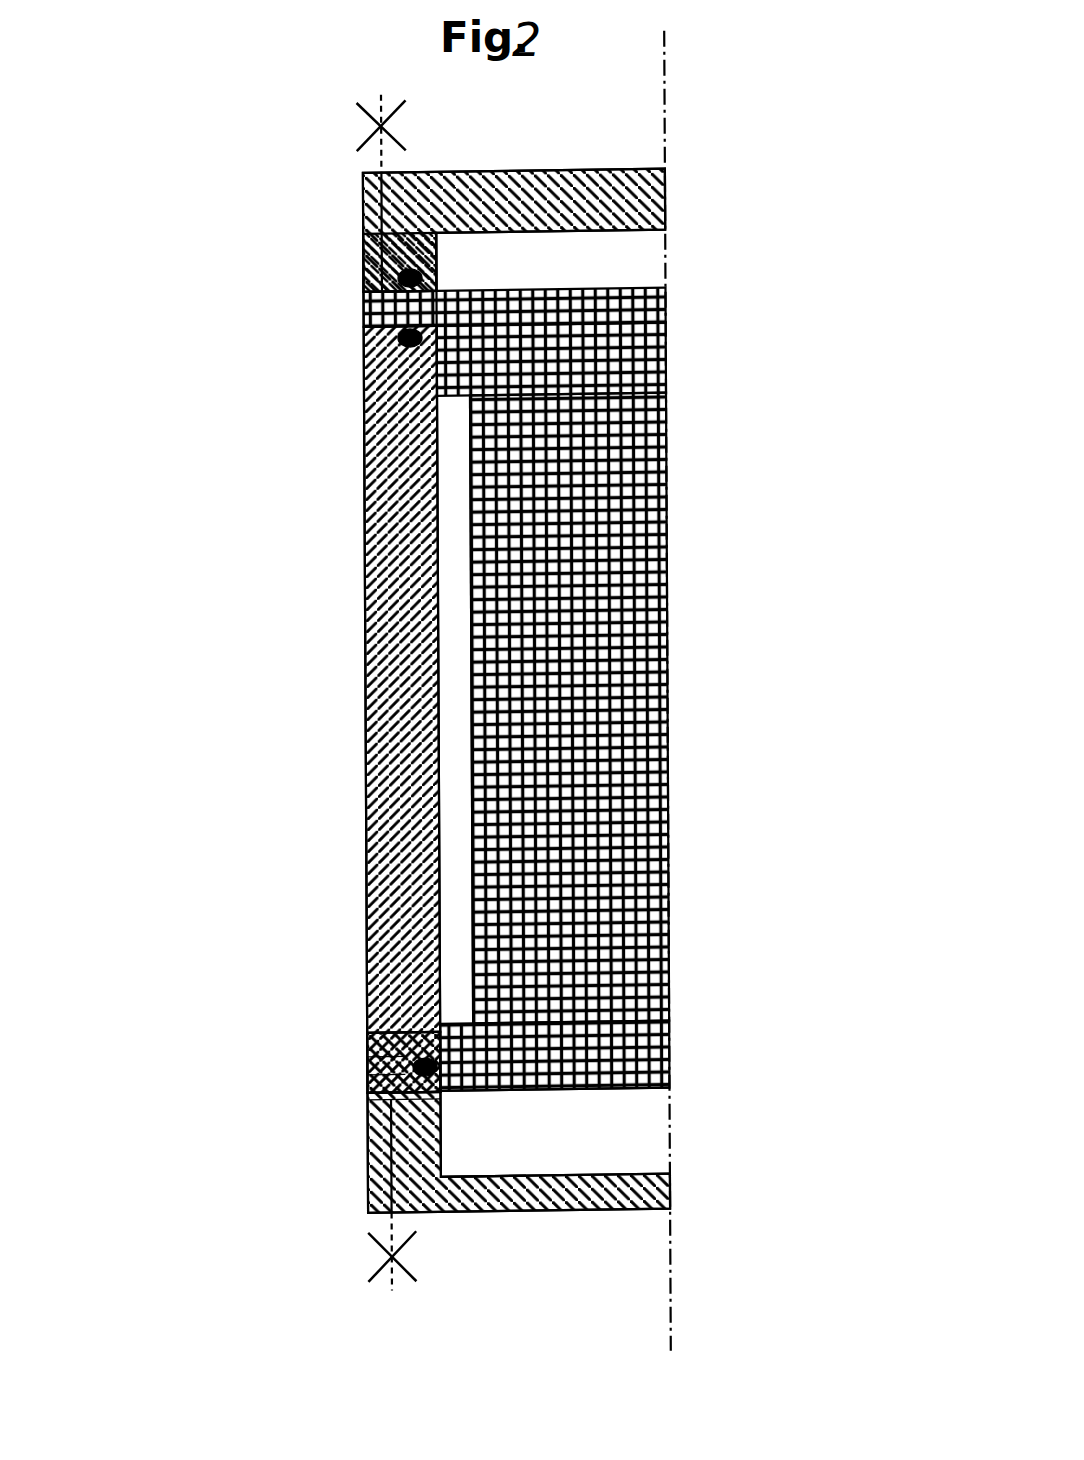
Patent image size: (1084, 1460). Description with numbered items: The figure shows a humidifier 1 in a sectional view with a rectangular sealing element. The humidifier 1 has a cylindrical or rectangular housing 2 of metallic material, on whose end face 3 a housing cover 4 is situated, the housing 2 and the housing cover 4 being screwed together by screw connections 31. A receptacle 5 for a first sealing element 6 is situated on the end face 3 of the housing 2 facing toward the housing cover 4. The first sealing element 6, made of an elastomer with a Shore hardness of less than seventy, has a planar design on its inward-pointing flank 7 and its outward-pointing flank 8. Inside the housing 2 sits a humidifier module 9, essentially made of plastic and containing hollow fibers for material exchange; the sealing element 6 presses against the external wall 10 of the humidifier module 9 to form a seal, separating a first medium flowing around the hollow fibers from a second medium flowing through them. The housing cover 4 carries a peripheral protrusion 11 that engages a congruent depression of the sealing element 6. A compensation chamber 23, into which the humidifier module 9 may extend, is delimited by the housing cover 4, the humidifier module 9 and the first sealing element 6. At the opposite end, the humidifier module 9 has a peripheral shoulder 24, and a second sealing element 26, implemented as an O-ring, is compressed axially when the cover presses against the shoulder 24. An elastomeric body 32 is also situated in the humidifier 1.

The humidifier 1 is at (326, 799).
The housing 2 is at (387, 858).
The first end face 3 is at (377, 1103).
The housing cover 4 is at (633, 207).
The receptacle 5 is at (372, 1093).
The first sealing element 6 is at (372, 1085).
The inward-pointing flank 7 is at (372, 1068).
The outward-pointing flank 8 is at (420, 1070).
The humidifier module 9 is at (647, 793).
The external wall 10 is at (470, 576).
The peripheral protrusion 11 is at (440, 1093).
The compensation chamber 23 is at (492, 1152).
The peripheral shoulder 24 is at (387, 316).
The second sealing element 26 is at (405, 340).
The screw connection 31 is at (385, 696).
The elastomeric body 32 is at (405, 278).